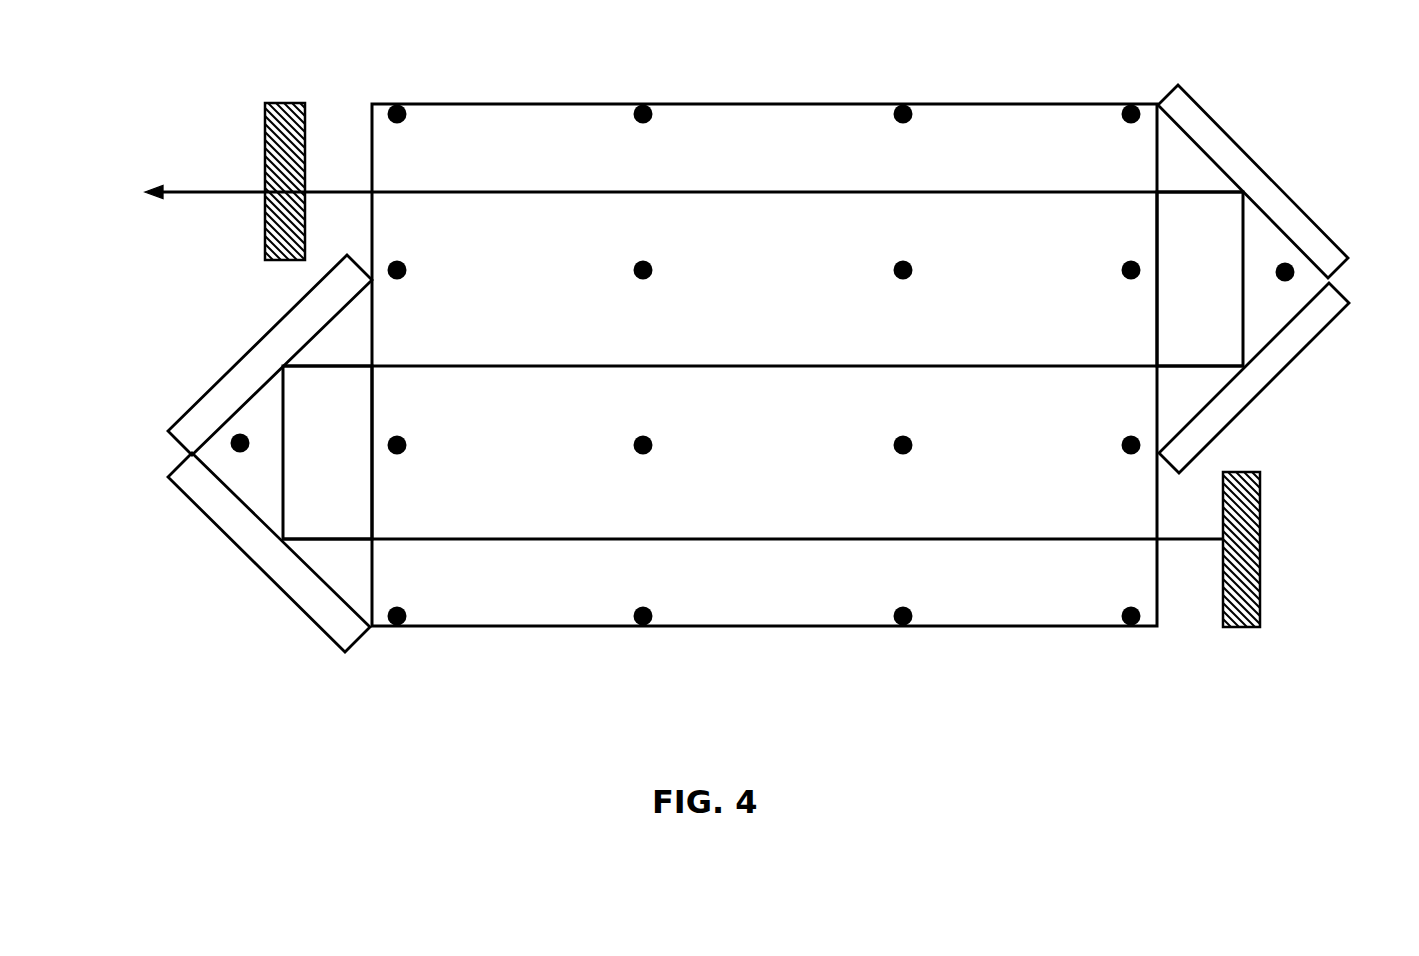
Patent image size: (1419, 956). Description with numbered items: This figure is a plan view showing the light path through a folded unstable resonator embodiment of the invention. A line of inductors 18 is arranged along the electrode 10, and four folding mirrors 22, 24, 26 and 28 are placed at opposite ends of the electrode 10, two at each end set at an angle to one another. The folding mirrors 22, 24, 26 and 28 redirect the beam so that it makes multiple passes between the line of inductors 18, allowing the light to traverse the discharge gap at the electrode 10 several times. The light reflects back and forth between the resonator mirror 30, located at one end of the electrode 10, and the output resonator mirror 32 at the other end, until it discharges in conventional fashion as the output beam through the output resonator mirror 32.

The electrode 10 is at (997, 643).
The inductors 18 is at (930, 96).
The folding mirror 22 is at (1275, 158).
The folding mirror 24 is at (1273, 397).
The folding mirror 26 is at (262, 593).
The folding mirror 28 is at (264, 313).
The resonator mirror 30 is at (1280, 500).
The output resonator mirror 32 is at (251, 131).